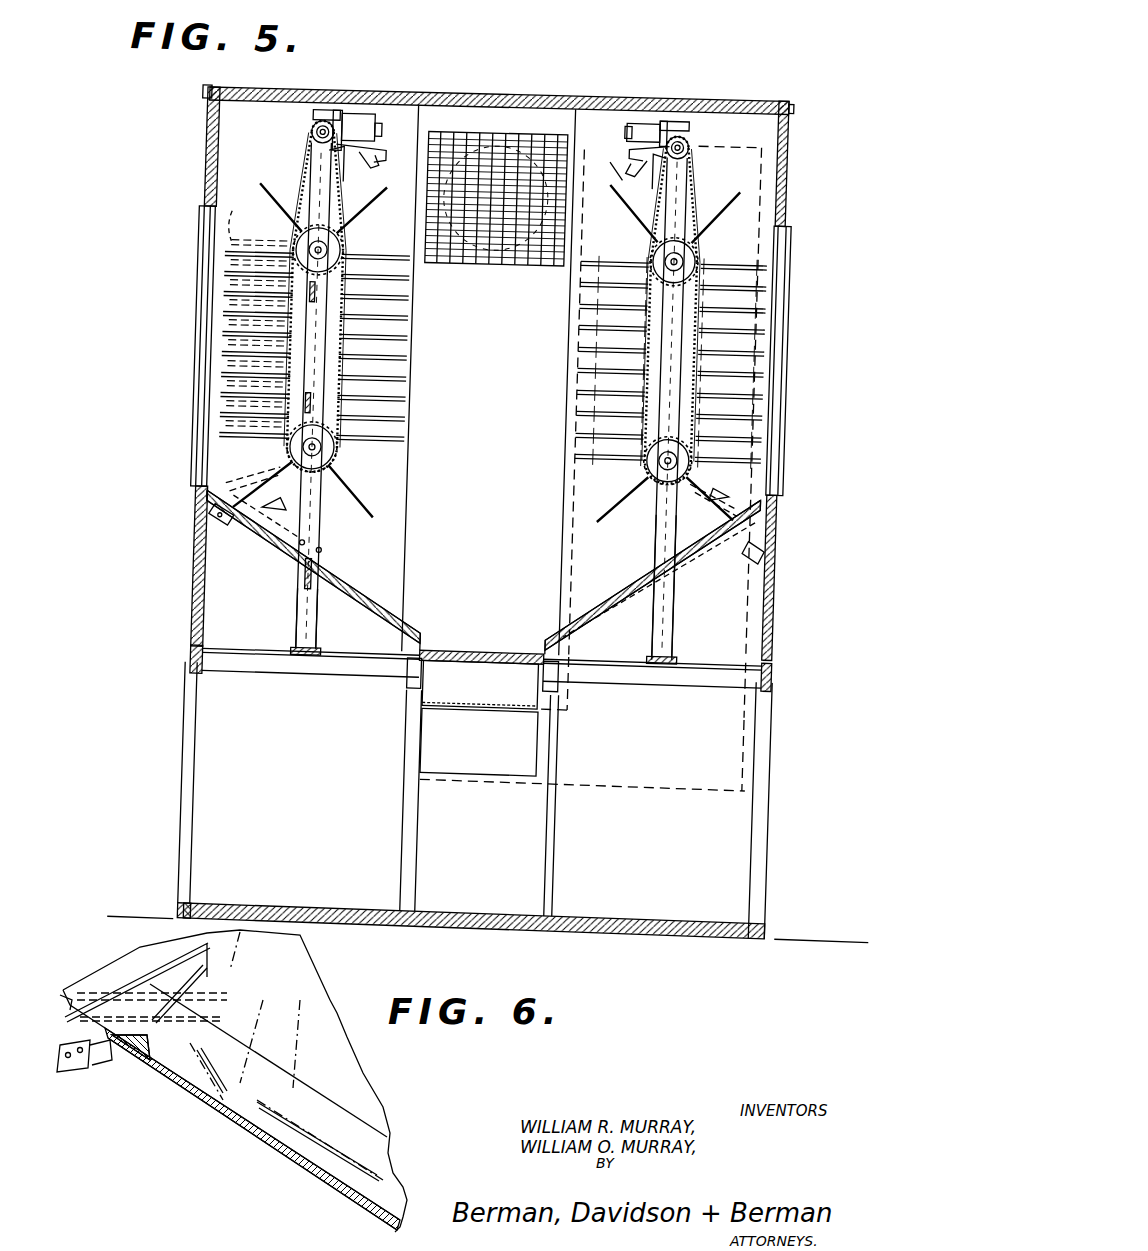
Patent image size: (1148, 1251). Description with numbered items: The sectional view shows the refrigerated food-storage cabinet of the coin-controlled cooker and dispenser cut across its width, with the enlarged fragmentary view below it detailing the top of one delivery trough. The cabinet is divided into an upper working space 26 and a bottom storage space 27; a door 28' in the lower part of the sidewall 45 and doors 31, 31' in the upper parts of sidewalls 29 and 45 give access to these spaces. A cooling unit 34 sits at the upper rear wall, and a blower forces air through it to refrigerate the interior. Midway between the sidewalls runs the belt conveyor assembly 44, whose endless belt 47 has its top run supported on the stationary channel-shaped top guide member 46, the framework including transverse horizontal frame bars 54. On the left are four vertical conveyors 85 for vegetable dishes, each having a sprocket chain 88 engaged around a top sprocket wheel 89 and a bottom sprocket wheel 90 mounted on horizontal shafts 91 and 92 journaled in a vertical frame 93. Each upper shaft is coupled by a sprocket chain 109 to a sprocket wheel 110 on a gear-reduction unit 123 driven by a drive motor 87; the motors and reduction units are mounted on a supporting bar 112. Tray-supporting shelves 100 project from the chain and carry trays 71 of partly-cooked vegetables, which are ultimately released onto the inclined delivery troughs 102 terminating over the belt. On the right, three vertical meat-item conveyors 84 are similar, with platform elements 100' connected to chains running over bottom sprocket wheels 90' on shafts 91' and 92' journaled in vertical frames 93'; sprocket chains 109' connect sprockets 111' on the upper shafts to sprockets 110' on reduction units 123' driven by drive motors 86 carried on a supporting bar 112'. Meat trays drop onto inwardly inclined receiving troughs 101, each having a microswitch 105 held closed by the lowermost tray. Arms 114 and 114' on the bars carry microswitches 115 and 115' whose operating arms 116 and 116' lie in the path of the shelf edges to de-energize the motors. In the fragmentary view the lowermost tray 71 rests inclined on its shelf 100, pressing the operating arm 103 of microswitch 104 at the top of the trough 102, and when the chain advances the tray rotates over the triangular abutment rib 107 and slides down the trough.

In FIG. 5, the upper working space 26 is at (504, 372).
In FIG. 5, the bottom storage space 27 is at (694, 915).
In FIG. 5, the door 28' is at (155, 788).
In FIG. 5, the sidewall 29 is at (790, 176).
In FIG. 5, the door 31 is at (796, 361).
In FIG. 5, the door 31' is at (171, 345).
In FIG. 5, the cooling unit 34 is at (552, 258).
In FIG. 5, the belt conveyor assembly 44 is at (486, 711).
In FIG. 5, the sidewall 45 is at (207, 128).
In FIG. 5, the top guide member 46 is at (572, 648).
In FIG. 5, the endless belt 47 is at (500, 642).
In FIG. 5, the horizontal frame bars 54 is at (332, 672).
In FIG. 5, the tray 71 is at (246, 222).
In FIG. 6, the tray 71 is at (152, 966).
In FIG. 5, the vertical meat-item conveyor 84 is at (590, 474).
In FIG. 5, the vertical conveyor 85 is at (432, 451).
In FIG. 5, the drive motor 86 is at (636, 113).
In FIG. 5, the drive motor 87 is at (372, 110).
In FIG. 5, the sprocket chain 88 is at (304, 352).
In FIG. 5, the top sprocket wheel 89 is at (304, 238).
In FIG. 5, the bottom sprocket wheel 90 is at (331, 453).
In FIG. 5, the bottom sprocket wheel 90' is at (644, 465).
In FIG. 5, the horizontal shaft 91 is at (339, 241).
In FIG. 5, the horizontal shaft 91' is at (708, 250).
In FIG. 5, the horizontal shaft 92 is at (340, 443).
In FIG. 5, the horizontal shaft 92' is at (696, 458).
In FIG. 5, the vertical frame 93 is at (288, 603).
In FIG. 5, the vertical frame 93' is at (684, 588).
In FIG. 5, the tray-supporting shelf 100 is at (445, 350).
In FIG. 6, the tray-supporting shelf 100 is at (267, 1056).
In FIG. 5, the platform element 100' is at (772, 350).
In FIG. 5, the receiving trough 101 is at (692, 573).
In FIG. 5, the delivery trough 102 is at (350, 588).
In FIG. 6, the delivery trough 102 is at (245, 1122).
In FIG. 6, the operating arm 103 is at (68, 990).
In FIG. 5, the microswitch 104 is at (236, 526).
In FIG. 6, the microswitch 104 is at (70, 1072).
In FIG. 5, the microswitch 105 is at (764, 546).
In FIG. 5, the abutment rib 107 is at (268, 510).
In FIG. 6, the abutment rib 107 is at (140, 1065).
In FIG. 5, the sprocket chain 109 is at (304, 190).
In FIG. 5, the sprocket chain 109' is at (690, 205).
In FIG. 5, the sprocket wheel 110 is at (284, 127).
In FIG. 5, the sprocket 110' is at (710, 151).
In FIG. 5, the sprocket 111' is at (647, 258).
In FIG. 5, the supporting bar 112 is at (353, 173).
In FIG. 5, the supporting bar 112' is at (642, 178).
In FIG. 5, the horizontally-extending arm 114 is at (351, 104).
In FIG. 5, the horizontally-extending arm 114' is at (654, 101).
In FIG. 5, the microswitch 115 is at (376, 139).
In FIG. 5, the microswitch 115' is at (623, 140).
In FIG. 5, the operating arm 116 is at (388, 169).
In FIG. 5, the bottom operating arm 116' is at (609, 180).
In FIG. 5, the gear-reduction unit 123 is at (288, 91).
In FIG. 5, the reduction unit 123' is at (704, 126).